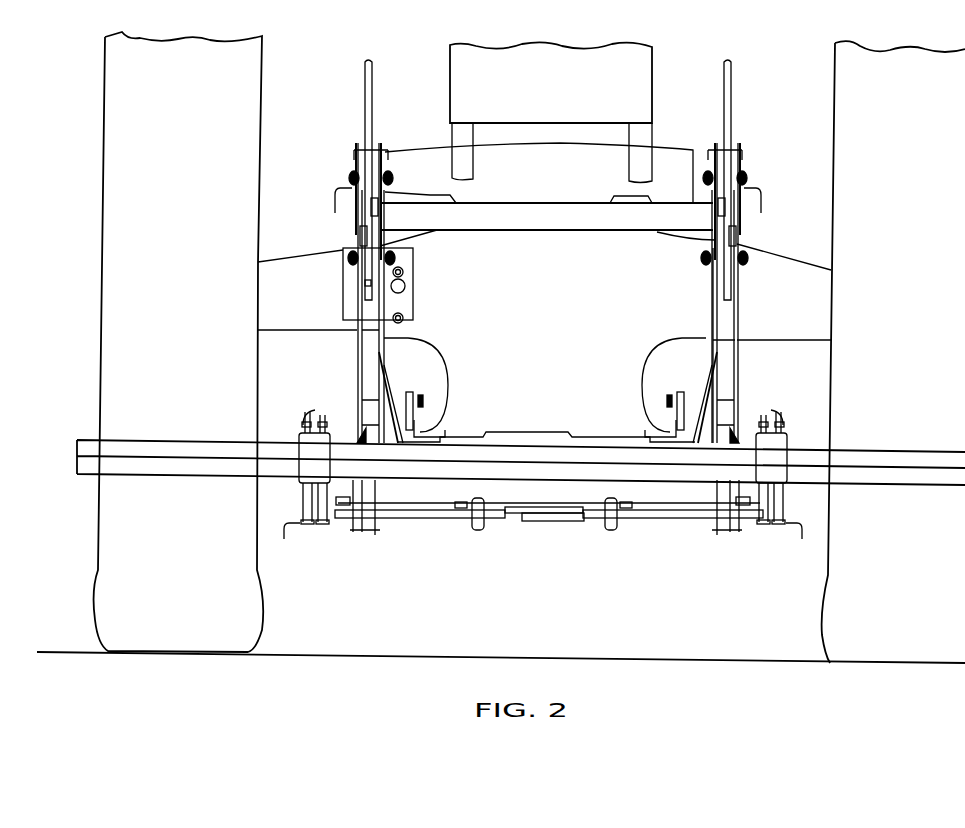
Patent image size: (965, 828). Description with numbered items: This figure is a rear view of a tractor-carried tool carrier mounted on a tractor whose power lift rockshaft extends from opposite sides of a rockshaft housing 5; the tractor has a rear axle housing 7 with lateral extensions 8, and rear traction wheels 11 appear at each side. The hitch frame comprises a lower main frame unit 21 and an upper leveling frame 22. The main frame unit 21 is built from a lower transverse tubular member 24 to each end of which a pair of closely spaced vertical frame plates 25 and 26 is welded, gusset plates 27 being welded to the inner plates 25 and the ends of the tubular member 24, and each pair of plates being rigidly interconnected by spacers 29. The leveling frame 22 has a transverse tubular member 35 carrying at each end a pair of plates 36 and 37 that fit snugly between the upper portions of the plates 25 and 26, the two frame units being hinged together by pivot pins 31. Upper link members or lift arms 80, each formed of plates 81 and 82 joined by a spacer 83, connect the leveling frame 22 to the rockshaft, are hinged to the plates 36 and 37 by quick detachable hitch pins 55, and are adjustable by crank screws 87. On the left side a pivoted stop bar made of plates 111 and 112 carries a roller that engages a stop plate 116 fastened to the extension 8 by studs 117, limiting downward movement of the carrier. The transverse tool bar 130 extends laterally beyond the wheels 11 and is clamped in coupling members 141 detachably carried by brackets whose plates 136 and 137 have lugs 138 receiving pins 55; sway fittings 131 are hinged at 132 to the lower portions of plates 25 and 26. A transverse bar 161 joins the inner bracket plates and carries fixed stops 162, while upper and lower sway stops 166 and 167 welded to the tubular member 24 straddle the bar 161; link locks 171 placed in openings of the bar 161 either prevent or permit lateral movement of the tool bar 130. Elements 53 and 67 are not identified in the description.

The power lift rockshaft housing 5 is at (585, 150).
The rear axle housing 7 is at (760, 252).
The lateral extension 8 is at (284, 262).
The rear traction wheel 11 is at (110, 160).
The lower main frame unit 21 is at (738, 323).
The upper rigid leveling frame 22 is at (513, 200).
The lower transverse tubular member 24 is at (655, 518).
The inner vertical frame plate 25 is at (383, 385).
The outer vertical frame plate 26 is at (358, 374).
The gusset plate 27 is at (400, 500).
The spacer 29 is at (365, 343).
The pivot pin 31 is at (350, 263).
The transverse tubular member 35 is at (566, 222).
The leveling frame plate 36 is at (380, 217).
The leveling frame plate 37 is at (362, 222).
The post 53 is at (410, 402).
The quick detachable hitch pin 55 is at (340, 196).
The bracket 67 is at (420, 427).
The upper link member 80 is at (352, 154).
The lift arm plate 81 is at (381, 143).
The lift arm plate 82 is at (358, 143).
The spacer 83 is at (368, 172).
The crank screw 87 is at (375, 108).
The stop bar plate 111 is at (364, 284).
The stop bar plate 112 is at (404, 290).
The stop plate 116 is at (405, 256).
The stud 117 is at (404, 273).
The transverse tool bar 130 is at (869, 452).
The sway fitting 131 is at (344, 500).
The hinge connection 132 is at (360, 428).
The bracket plate 136 is at (314, 420).
The bracket plate 137 is at (300, 427).
The lug 138 is at (305, 526).
The coupling member 141 is at (303, 467).
The transverse bar 161 is at (450, 518).
The fixed stop 162 is at (460, 502).
The upper sway stop 166 is at (554, 507).
The lower sway stop 167 is at (546, 521).
The link lock 171 is at (482, 530).